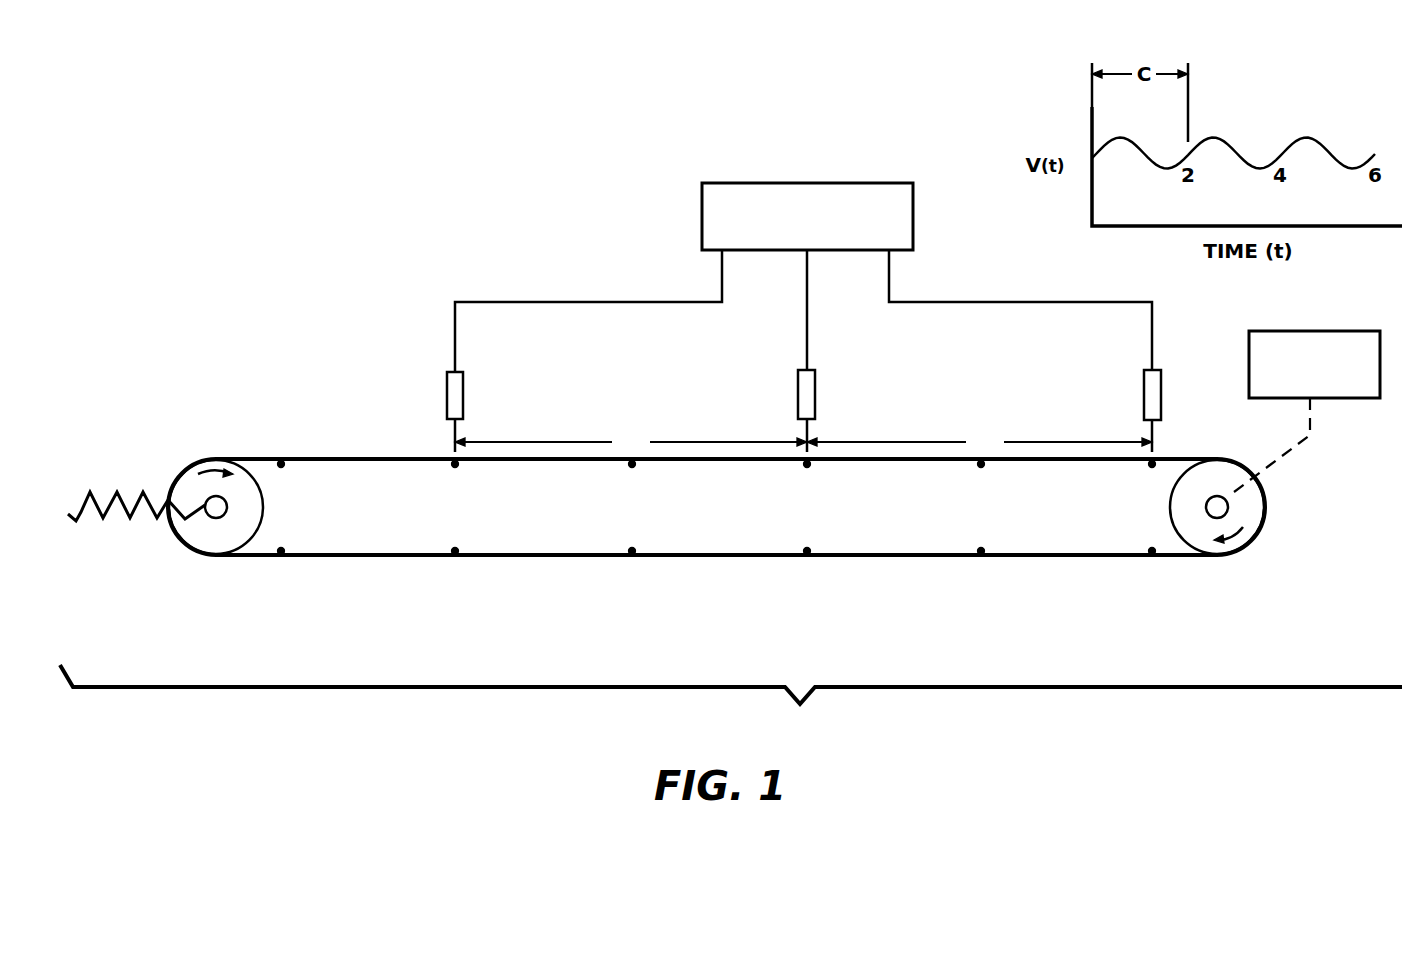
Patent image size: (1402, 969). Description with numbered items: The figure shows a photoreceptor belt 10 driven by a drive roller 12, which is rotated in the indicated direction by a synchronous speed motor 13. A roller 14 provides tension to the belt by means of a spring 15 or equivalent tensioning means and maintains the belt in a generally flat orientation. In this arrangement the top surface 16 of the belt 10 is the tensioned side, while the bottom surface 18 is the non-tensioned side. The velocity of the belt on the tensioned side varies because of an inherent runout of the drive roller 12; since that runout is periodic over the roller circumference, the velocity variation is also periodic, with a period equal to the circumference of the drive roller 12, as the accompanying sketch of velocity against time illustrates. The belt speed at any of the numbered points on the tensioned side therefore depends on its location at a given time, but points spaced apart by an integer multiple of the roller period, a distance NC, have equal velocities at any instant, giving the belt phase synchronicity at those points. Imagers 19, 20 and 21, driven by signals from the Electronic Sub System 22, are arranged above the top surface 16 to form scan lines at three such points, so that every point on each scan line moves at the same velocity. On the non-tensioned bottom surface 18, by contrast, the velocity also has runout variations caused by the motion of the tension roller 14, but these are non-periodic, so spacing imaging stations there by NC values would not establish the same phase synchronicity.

The photoreceptor belt 10 is at (923, 580).
The drive roller 12 is at (1234, 529).
The synchronous speed motor 13 is at (1297, 385).
The roller 14 is at (216, 520).
The spring 15 is at (136, 534).
The top surface 16 is at (716, 417).
The bottom surface 18 is at (716, 590).
The imager 19 is at (483, 398).
The imager 20 is at (840, 408).
The imager 21 is at (1185, 403).
The Electronic Sub System (ESS) 22 is at (803, 267).